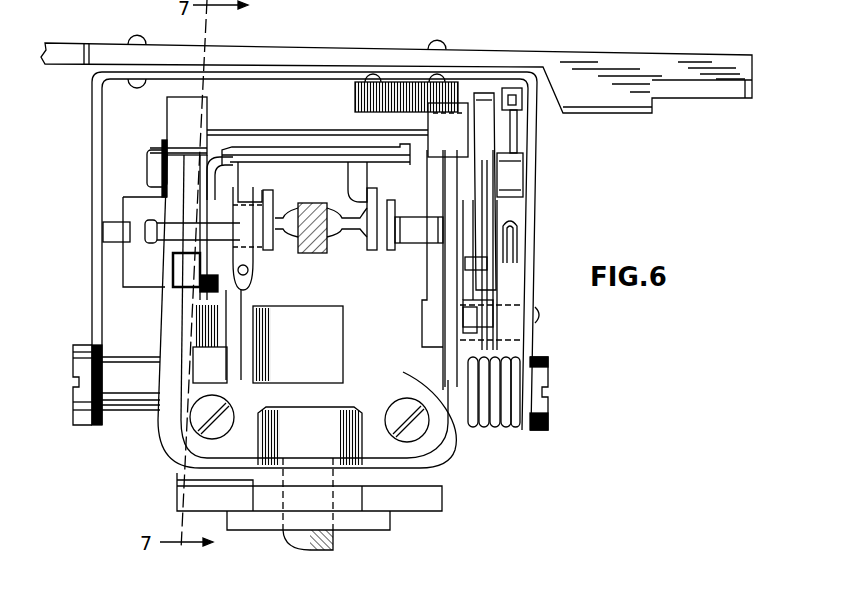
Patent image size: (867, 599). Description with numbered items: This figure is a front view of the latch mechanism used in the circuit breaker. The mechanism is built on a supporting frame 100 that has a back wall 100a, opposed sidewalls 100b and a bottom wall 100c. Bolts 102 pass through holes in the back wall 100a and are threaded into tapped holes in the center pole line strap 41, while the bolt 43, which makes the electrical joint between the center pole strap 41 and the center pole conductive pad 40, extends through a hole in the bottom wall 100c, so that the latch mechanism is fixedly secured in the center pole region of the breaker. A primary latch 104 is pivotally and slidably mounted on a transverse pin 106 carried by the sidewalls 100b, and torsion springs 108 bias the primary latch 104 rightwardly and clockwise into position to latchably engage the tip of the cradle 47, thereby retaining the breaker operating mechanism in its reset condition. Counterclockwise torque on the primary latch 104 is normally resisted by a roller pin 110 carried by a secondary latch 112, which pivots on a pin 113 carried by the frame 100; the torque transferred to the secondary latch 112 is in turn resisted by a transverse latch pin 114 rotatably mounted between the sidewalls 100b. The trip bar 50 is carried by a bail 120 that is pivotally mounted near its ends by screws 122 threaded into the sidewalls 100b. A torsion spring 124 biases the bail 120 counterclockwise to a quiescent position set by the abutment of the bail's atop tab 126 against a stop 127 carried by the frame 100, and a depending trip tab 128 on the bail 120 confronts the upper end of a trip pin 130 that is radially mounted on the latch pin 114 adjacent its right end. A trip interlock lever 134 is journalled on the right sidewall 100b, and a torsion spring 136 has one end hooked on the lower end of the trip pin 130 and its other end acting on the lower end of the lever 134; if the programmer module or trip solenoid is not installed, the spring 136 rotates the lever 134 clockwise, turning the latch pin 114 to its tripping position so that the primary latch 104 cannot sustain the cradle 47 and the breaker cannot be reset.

The center pole conductive pad 40 is at (362, 523).
The center pole line strap 41 is at (403, 503).
The bolt 43 is at (318, 442).
The cradle 47 is at (317, 255).
The trip bar 50 is at (652, 55).
The supporting frame 100 is at (372, 302).
The back wall 100a is at (443, 423).
The sidewalls 100b is at (170, 370).
The bottom wall 100c is at (413, 477).
The bolts 102 is at (226, 424).
The primary latch 104 is at (328, 189).
The transverse pin 106 is at (348, 228).
The torsion springs 108 is at (264, 250).
The roller pin 110 is at (197, 297).
The secondary latch 112 is at (232, 329).
The pin 113 is at (217, 356).
The latch pin 114 is at (513, 172).
The bail 120 is at (94, 146).
The screws 122 is at (80, 420).
The torsion spring 124 is at (500, 428).
The atop tab 126 is at (356, 97).
The stop 127 is at (437, 127).
The trip tab 128 is at (522, 103).
The trip pin 130 is at (516, 130).
The trip interlock lever 134 is at (485, 93).
The torsion spring 136 is at (473, 350).